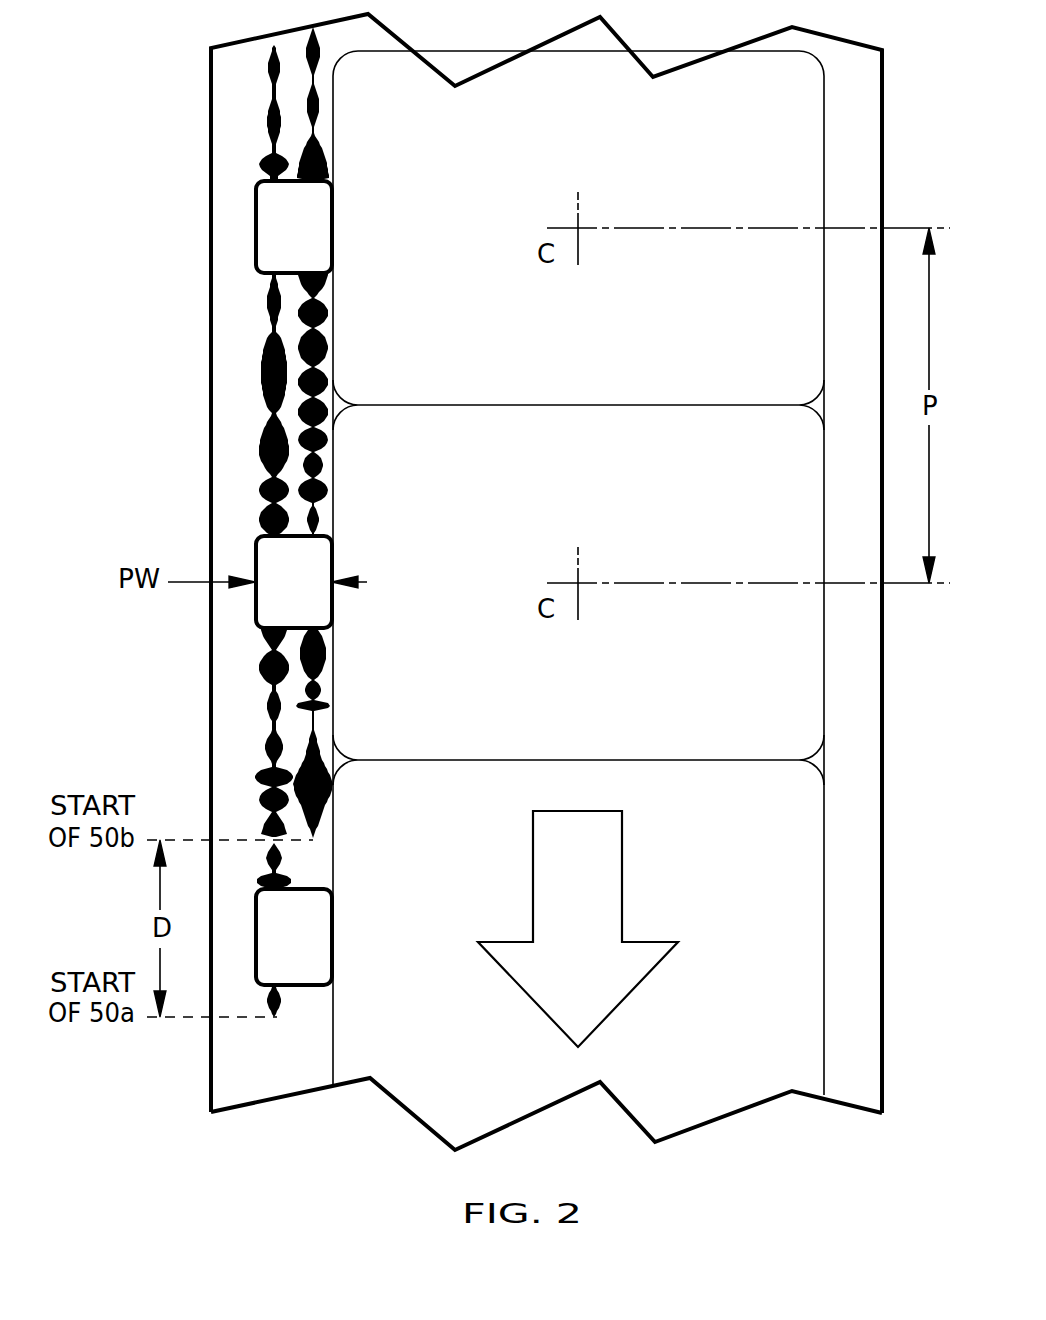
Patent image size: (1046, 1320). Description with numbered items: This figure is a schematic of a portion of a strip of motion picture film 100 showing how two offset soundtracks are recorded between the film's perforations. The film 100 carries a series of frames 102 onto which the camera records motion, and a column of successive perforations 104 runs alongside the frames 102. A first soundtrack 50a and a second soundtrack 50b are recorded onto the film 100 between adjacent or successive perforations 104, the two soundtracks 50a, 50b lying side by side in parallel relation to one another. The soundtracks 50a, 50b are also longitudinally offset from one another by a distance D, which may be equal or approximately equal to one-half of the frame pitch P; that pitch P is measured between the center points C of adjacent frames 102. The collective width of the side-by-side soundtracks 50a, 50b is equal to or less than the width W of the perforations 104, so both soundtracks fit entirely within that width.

The film 100 is at (228, 108).
The frames 102 is at (690, 173).
The perforations 104 is at (269, 222).
The first soundtrack 50a is at (258, 345).
The second soundtrack 50b is at (305, 445).